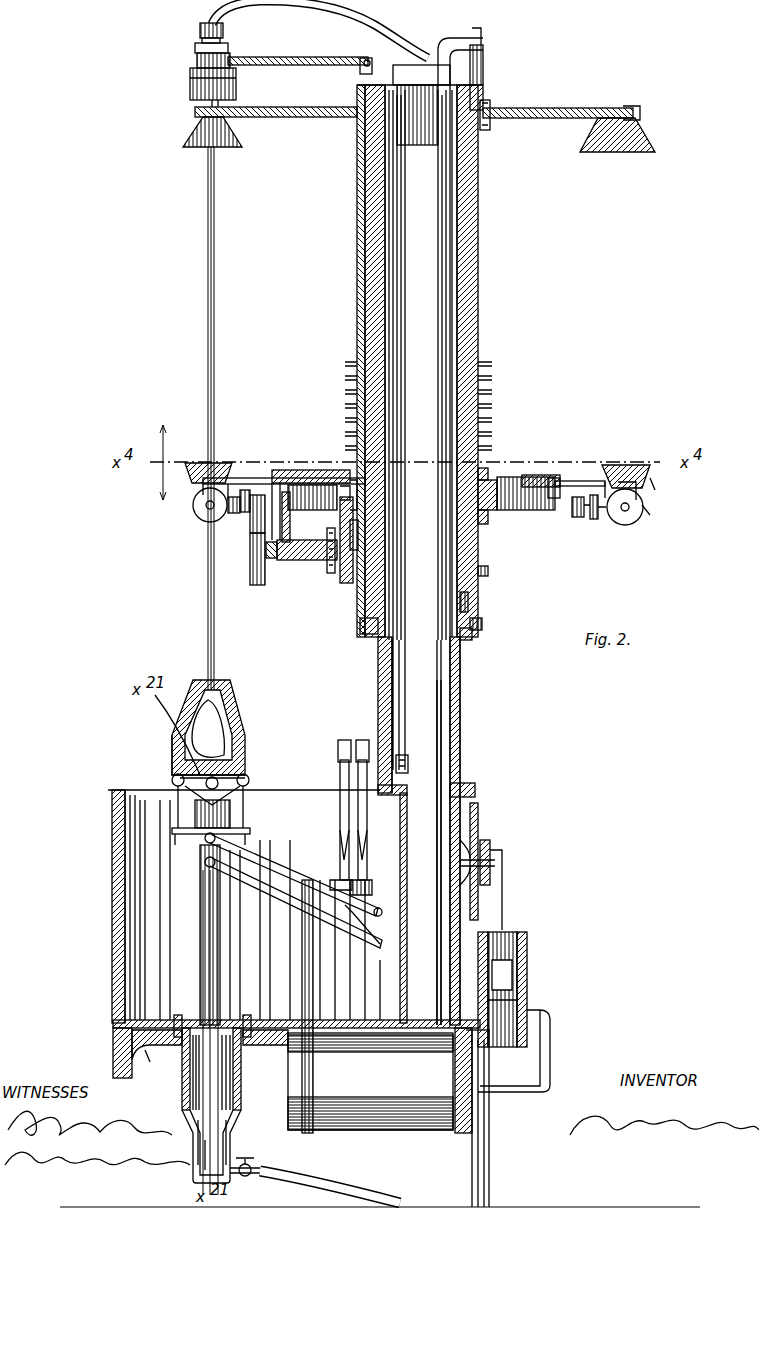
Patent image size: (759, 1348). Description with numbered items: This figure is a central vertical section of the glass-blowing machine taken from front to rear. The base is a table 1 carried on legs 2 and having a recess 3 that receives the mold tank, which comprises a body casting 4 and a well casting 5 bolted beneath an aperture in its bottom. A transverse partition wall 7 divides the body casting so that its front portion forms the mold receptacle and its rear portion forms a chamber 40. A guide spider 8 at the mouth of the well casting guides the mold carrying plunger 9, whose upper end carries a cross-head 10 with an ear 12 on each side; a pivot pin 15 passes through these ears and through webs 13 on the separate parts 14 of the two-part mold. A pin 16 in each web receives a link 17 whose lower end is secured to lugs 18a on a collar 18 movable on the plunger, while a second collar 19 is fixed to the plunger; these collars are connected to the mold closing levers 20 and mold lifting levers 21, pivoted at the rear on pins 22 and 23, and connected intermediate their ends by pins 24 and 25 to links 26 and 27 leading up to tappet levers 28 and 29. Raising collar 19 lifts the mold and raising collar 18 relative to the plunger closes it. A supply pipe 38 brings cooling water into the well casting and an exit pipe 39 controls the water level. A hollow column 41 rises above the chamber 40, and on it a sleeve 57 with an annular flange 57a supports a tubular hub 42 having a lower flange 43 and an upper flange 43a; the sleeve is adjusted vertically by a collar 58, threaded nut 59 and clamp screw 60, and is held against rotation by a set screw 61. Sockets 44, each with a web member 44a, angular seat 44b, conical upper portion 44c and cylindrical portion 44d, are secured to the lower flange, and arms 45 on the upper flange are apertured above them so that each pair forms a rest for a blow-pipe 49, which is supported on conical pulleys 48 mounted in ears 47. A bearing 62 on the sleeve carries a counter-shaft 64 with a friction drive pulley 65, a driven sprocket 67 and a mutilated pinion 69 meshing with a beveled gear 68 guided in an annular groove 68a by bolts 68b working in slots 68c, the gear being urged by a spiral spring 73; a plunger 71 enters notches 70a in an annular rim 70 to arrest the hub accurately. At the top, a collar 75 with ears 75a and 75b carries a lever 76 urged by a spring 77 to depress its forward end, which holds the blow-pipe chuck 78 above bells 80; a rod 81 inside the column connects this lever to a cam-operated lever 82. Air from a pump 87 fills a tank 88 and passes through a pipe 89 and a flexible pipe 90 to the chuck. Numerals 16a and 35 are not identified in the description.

The table 1 is at (150, 1062).
The legs 2 is at (489, 1136).
The recess 3 is at (115, 1020).
The body casting 4 is at (244, 906).
The well casting 5 is at (242, 1088).
The transverse partition wall 7 is at (398, 996).
The guide spider 8 is at (233, 1022).
The mold carrying plunger 9 is at (205, 961).
The cross-head 10 is at (230, 814).
The ear 12 is at (222, 800).
The webs 13 is at (222, 780).
The mold parts 14 is at (226, 684).
The pivot pin 15 is at (178, 778).
The pin 16 is at (173, 778).
The pin 16a is at (176, 834).
The link 17 is at (178, 800).
The collar 18 is at (206, 864).
The lugs 18a is at (218, 838).
The second collar 19 is at (203, 872).
The mold closing levers 20 is at (338, 882).
The mold lifting levers 21 is at (290, 900).
The pin 22 is at (378, 908).
The pin 23 is at (378, 943).
The pin 24 is at (358, 882).
The pin 25 is at (348, 920).
The link 26 is at (340, 830).
The link 27 is at (360, 838).
The tappet lever 28 is at (344, 740).
The tappet lever 29 is at (363, 740).
The gear 35 is at (232, 510).
The supply pipe 38 is at (258, 1168).
The exit pipe 39 is at (302, 995).
The chamber 40 is at (462, 818).
The hollow column 41 is at (432, 692).
The tubular hub 42 is at (480, 300).
The lower flange 43 is at (505, 488).
The upper flange 43a is at (484, 122).
The socket 44 is at (228, 468).
The web member 44a is at (252, 478).
The angular seat 44b is at (555, 478).
The conical upper portion 44c is at (650, 478).
The cylindrical portion 44d is at (645, 510).
The arm 45 is at (290, 117).
The ear 47 is at (636, 515).
The conical pulley 48 is at (615, 515).
The blow-pipe 49 is at (207, 215).
The sleeve 57 is at (478, 222).
The annular flange 57a is at (480, 522).
The collar 58 is at (472, 634).
The threaded nut 59 is at (475, 602).
The clamp screw 60 is at (484, 622).
The set screw 61 is at (490, 577).
The bearing 62 is at (310, 560).
The counter-shaft 64 is at (278, 562).
The friction drive pulley 65 is at (260, 580).
The driven sprocket 67 is at (329, 575).
The beveled gear 68 is at (490, 512).
The annular groove 68a is at (345, 490).
The bolts 68b is at (345, 482).
The slots 68c is at (485, 476).
The mutilated pinion 69 is at (346, 582).
The annular rim 70 is at (322, 504).
The notches 70a is at (282, 505).
The plunger 71 is at (268, 535).
The spiral spring 73 is at (490, 383).
The collar 75 is at (483, 102).
The ears 75a is at (362, 68).
The ears 75b is at (486, 75).
The lever 76 is at (270, 57).
The spring 77 is at (448, 58).
The blow-pipe chuck 78 is at (190, 95).
The bells 80 is at (200, 148).
The rod 81 is at (421, 75).
The lever 82 is at (410, 765).
The pump 87 is at (528, 965).
The tank 88 is at (370, 1081).
The pipe 89 is at (438, 970).
The flexible pipe 90 is at (338, 22).